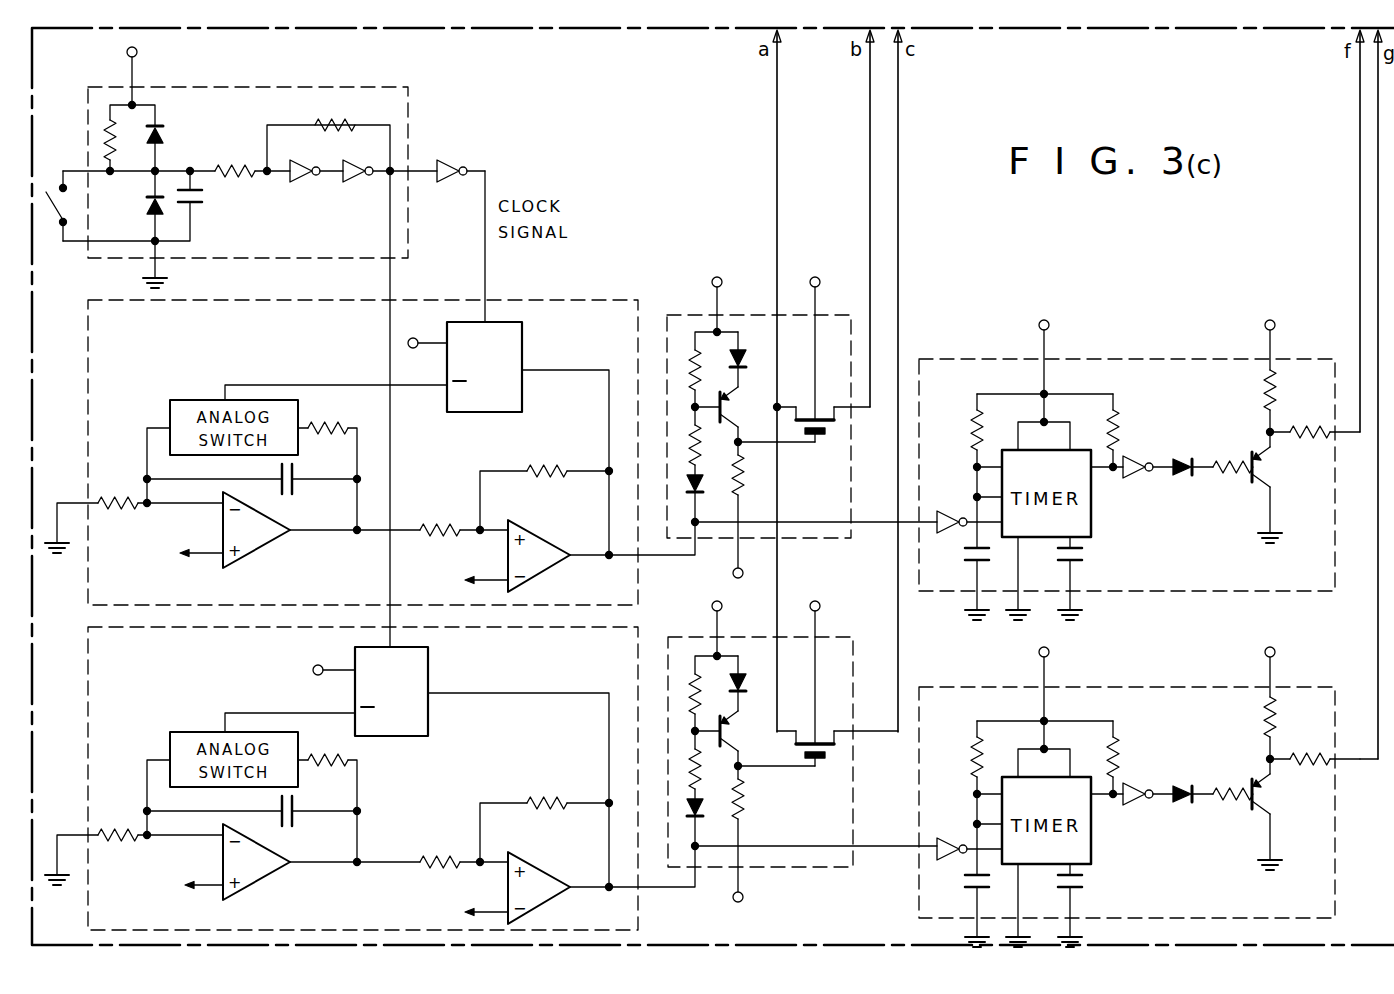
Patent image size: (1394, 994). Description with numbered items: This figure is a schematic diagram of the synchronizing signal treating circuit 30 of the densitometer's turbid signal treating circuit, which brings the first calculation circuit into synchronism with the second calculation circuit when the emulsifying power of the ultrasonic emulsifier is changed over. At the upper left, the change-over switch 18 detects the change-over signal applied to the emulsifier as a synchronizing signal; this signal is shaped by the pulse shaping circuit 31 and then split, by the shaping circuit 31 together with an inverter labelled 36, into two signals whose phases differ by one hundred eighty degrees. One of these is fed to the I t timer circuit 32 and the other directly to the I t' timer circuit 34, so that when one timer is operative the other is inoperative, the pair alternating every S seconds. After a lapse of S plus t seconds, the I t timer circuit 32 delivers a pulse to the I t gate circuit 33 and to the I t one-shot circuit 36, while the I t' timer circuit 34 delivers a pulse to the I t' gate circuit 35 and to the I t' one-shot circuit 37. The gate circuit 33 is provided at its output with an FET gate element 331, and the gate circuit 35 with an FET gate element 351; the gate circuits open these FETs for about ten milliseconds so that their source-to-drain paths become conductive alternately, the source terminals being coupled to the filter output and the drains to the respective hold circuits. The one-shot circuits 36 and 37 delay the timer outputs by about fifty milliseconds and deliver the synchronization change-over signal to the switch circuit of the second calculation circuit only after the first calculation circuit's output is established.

The synchronizing signal treating circuit 30 is at (566, 29).
The shaping circuit 31 is at (283, 87).
The change-over switch 18 is at (58, 227).
The I t timer circuit 32 is at (88, 359).
The I t' timer circuit 34 is at (88, 645).
The I t gate circuit 33 is at (795, 422).
The FET gate element 331 is at (824, 437).
The I t' gate circuit 35 is at (802, 766).
The FET gate element 351 is at (824, 760).
The I t one-shot circuit 36 is at (452, 164).
The I t' one-shot circuit 37 is at (1192, 687).